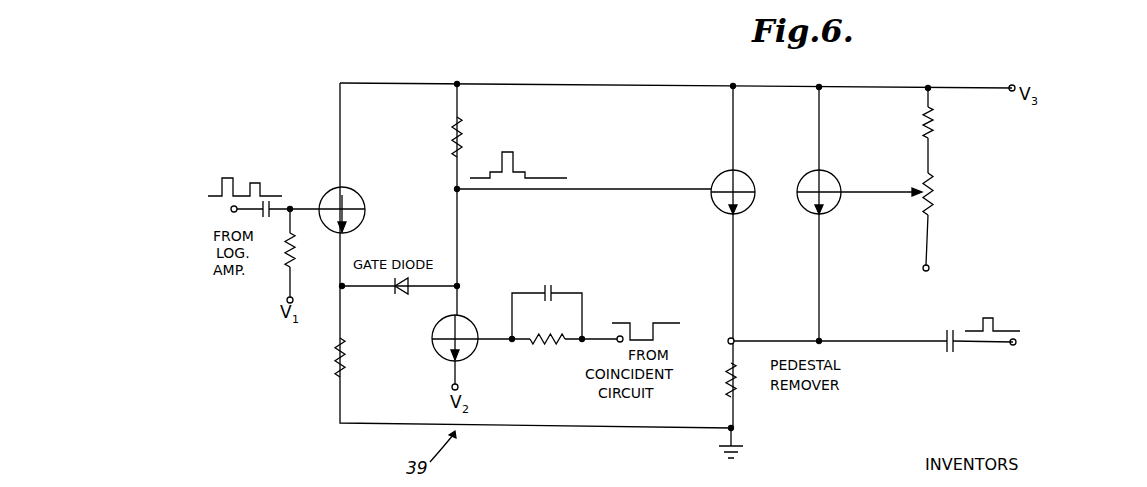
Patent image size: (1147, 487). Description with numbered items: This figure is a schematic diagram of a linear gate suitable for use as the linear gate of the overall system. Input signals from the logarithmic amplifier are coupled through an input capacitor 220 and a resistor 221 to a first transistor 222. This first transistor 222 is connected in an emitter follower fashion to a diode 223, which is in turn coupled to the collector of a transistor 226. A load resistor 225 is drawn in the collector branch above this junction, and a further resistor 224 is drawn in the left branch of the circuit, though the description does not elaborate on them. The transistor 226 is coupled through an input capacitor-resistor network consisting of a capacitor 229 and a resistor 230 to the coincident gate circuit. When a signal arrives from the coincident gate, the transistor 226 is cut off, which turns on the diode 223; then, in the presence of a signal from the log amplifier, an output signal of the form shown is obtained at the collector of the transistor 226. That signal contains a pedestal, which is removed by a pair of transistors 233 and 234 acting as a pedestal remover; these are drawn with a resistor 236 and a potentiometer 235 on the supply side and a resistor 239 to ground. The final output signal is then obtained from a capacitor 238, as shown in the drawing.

The input capacitor 220 is at (275, 207).
The resistor 221 is at (297, 257).
The first transistor 222 is at (365, 211).
The diode 223 is at (404, 298).
The resistor 224 is at (333, 360).
The load resistor 225 is at (450, 128).
The transistor 226 is at (436, 348).
The input capacitor 229 is at (550, 290).
The resistor 230 is at (551, 349).
The transistor 233 is at (715, 178).
The transistor 234 is at (808, 172).
The potentiometer 235 is at (933, 205).
The resistor 236 is at (933, 130).
The capacitor 238 is at (950, 353).
The resistor 239 is at (737, 395).